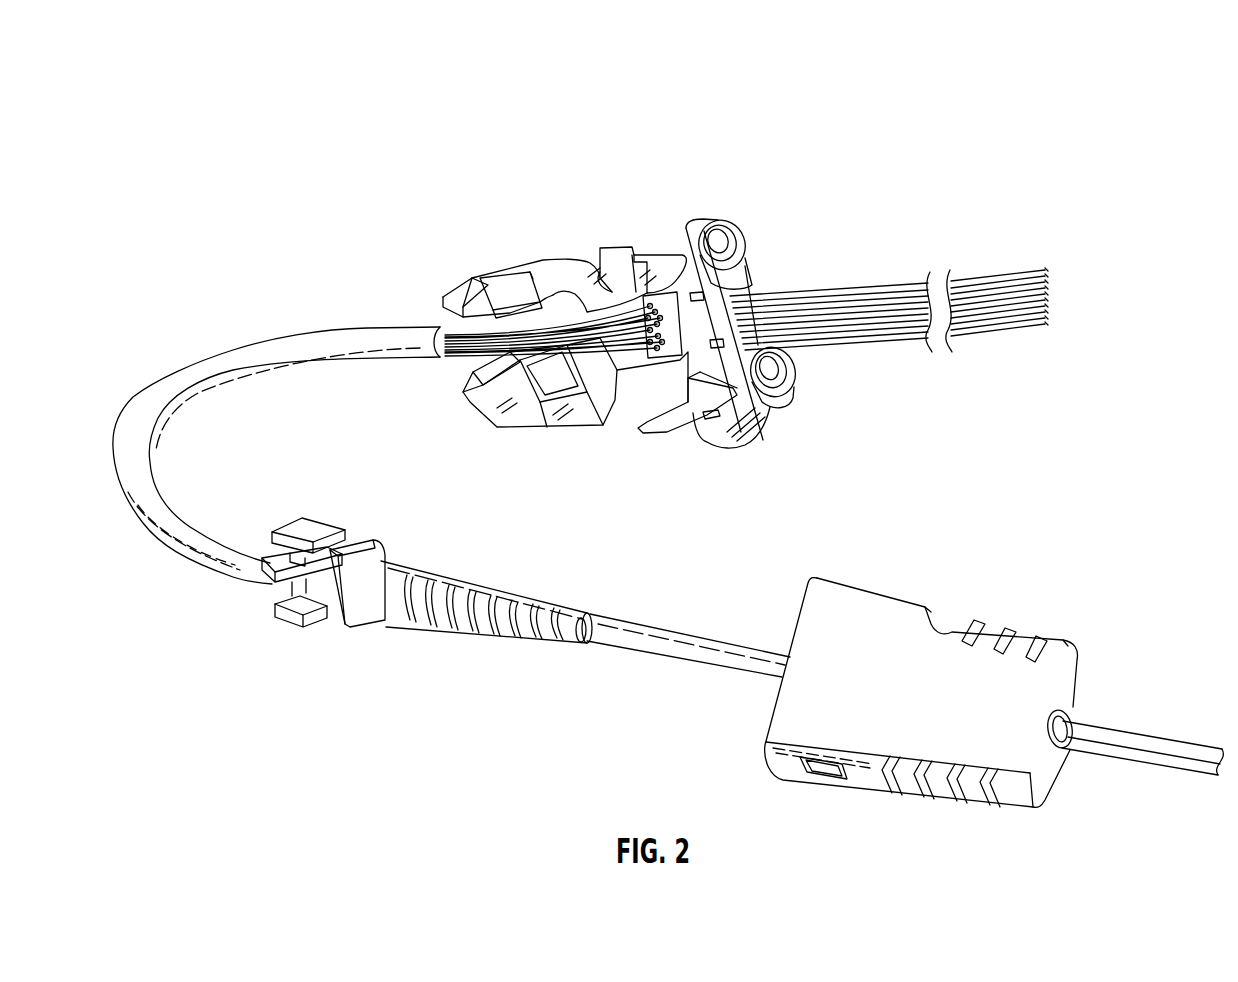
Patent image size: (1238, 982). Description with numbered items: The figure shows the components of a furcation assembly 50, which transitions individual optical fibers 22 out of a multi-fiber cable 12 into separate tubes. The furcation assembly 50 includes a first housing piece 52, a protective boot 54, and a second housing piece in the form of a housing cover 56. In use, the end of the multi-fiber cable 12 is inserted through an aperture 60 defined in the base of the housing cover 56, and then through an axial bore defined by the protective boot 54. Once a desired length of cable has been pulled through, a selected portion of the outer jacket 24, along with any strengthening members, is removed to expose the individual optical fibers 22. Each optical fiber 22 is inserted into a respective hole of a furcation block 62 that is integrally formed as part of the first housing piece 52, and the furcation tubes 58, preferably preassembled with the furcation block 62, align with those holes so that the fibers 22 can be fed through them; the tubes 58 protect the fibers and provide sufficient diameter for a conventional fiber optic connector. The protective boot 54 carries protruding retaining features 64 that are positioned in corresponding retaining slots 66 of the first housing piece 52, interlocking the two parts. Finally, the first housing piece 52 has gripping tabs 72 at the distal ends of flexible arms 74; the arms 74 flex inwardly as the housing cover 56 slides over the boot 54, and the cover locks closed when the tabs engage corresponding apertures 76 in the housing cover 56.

The furcation assembly 50 is at (325, 178).
The multi-fiber cable 12 is at (213, 368).
The outer jacket 24 is at (322, 355).
The first housing piece 52 is at (688, 226).
The furcation block 62 is at (675, 316).
The retaining slots 66 is at (500, 298).
The individual optical fibers 22 is at (620, 355).
The furcation tubes 58 is at (898, 270).
The gripping tabs 72 is at (665, 420).
The flexible arms 74 is at (693, 412).
The retaining features 64 is at (313, 527).
The protective boot 54 is at (377, 597).
The aperture 60 is at (1068, 720).
The housing cover 56 is at (958, 735).
The apertures 76 is at (820, 762).